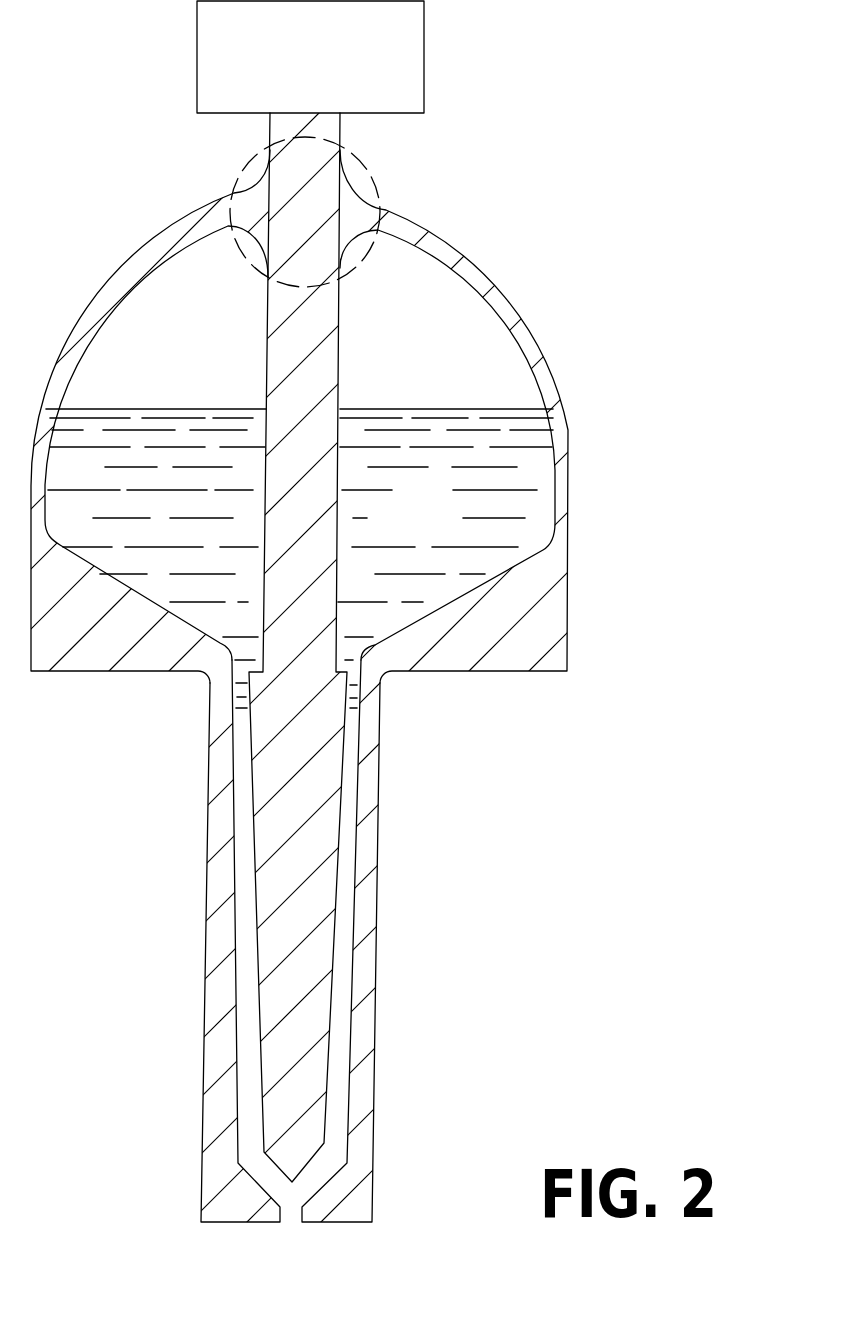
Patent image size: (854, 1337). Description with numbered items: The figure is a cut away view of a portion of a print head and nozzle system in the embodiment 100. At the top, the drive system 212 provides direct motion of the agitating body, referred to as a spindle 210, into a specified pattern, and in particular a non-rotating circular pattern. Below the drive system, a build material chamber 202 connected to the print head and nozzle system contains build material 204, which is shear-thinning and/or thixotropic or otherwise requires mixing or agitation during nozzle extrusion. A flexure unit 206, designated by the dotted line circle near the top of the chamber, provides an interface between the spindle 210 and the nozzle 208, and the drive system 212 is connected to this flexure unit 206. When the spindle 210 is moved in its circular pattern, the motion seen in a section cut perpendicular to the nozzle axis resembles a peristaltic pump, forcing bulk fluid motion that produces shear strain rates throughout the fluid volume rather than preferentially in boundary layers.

The embodiment 100 is at (427, 611).
The build material chamber 202 is at (448, 368).
The build material 204 is at (445, 532).
The flexure unit 206 is at (377, 182).
The nozzle 208 is at (208, 825).
The spindle 210 is at (275, 940).
The drive system 212 is at (197, 69).